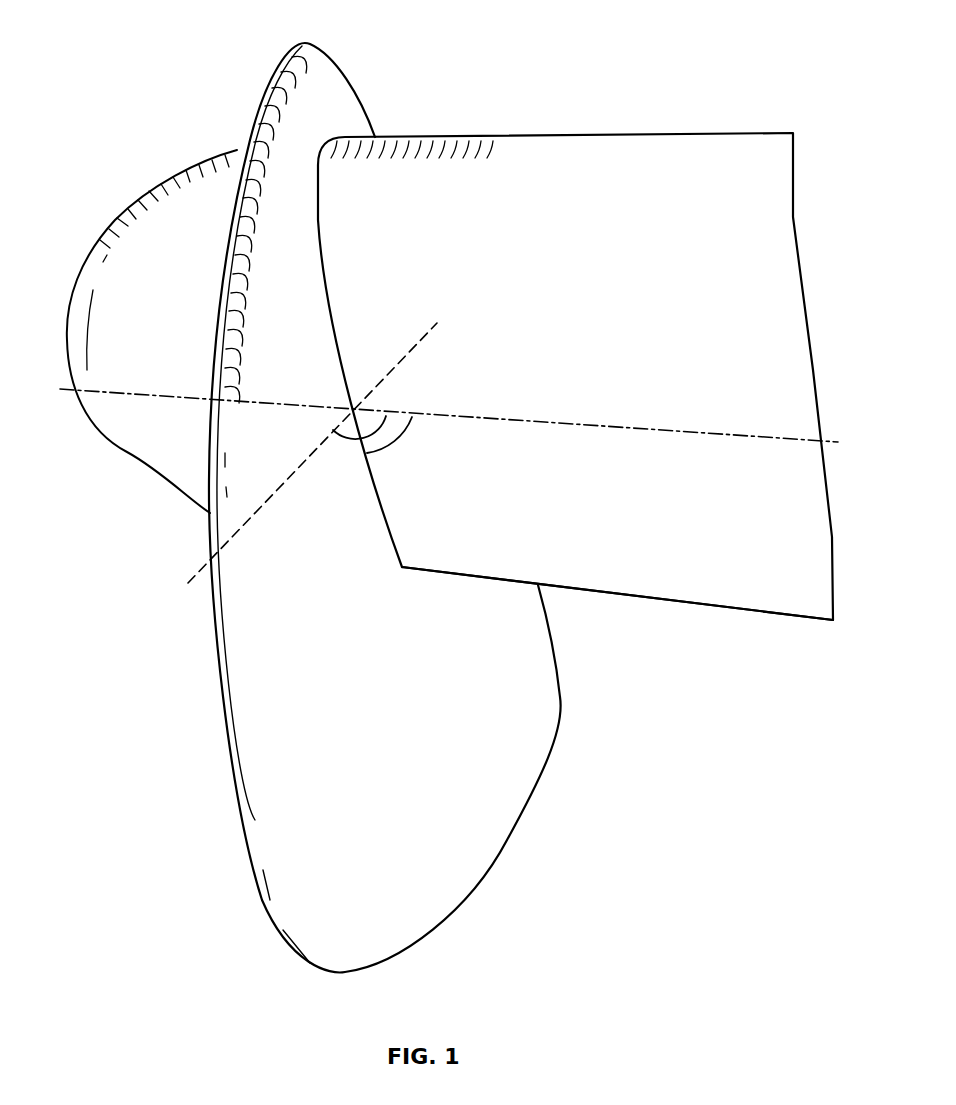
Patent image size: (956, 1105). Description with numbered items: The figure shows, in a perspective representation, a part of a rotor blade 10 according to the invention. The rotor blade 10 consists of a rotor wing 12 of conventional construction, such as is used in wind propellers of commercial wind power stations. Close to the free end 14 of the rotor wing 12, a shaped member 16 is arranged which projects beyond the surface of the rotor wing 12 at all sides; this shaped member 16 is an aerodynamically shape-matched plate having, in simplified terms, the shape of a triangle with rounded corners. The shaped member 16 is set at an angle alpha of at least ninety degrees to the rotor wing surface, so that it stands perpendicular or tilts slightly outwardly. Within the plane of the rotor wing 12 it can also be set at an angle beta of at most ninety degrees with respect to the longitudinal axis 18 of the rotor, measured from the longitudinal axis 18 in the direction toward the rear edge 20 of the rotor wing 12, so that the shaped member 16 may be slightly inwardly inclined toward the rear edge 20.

The rotor blade 10 is at (478, 58).
The rotor wing 12 is at (624, 157).
The free end of the rotor wing 14 is at (90, 430).
The shaped member 16 is at (543, 712).
The longitudinal axis of the rotor 18 is at (573, 422).
The rear edge of the rotor wing 20 is at (652, 600).